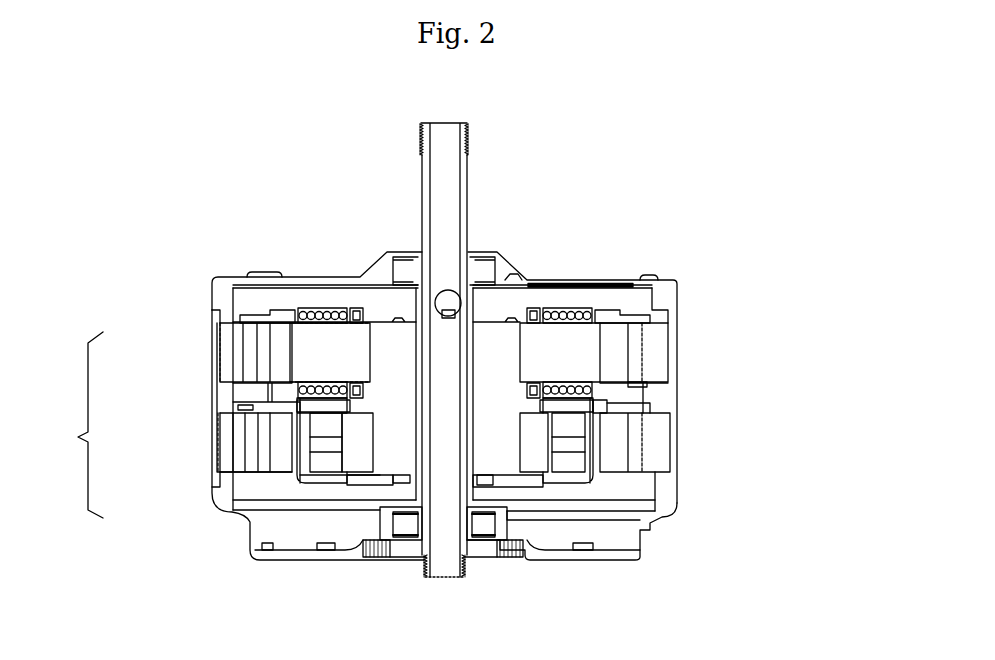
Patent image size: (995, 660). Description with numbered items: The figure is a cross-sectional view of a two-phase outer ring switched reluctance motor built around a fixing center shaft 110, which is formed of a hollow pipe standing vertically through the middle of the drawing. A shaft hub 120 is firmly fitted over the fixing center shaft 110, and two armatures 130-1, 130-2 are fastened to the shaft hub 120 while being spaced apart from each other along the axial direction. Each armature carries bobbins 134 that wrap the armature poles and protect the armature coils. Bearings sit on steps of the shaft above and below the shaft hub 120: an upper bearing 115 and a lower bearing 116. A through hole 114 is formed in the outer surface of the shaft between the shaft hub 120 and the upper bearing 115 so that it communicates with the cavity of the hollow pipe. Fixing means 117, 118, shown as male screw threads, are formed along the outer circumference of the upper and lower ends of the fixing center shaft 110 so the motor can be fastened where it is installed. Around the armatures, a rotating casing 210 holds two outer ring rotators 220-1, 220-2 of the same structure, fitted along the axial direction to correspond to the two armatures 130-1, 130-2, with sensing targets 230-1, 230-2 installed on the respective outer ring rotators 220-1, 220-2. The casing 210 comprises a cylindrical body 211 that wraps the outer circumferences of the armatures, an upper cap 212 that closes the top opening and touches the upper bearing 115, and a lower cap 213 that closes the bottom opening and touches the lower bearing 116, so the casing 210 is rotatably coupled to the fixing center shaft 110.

The fixing center shaft 110 is at (468, 178).
The fixing means 117 is at (468, 137).
The fixing means 118 is at (465, 573).
The through hole 114 is at (488, 270).
The upper bearing 115 is at (437, 290).
The shaft hub 120 is at (602, 278).
The bobbin 134 is at (597, 302).
The sensing target 230-1 is at (612, 316).
The outer ring rotator 220-1 is at (622, 345).
The armature 130-1 is at (577, 363).
The sensing target 230-2 is at (627, 415).
The outer ring rotator 220-2 is at (618, 442).
The armature 130-2 is at (577, 460).
The casing 210 is at (433, 410).
The cylindrical body 211 is at (213, 412).
The upper cap 212 is at (213, 302).
The lower cap 213 is at (213, 502).
The lower bearing 116 is at (482, 523).